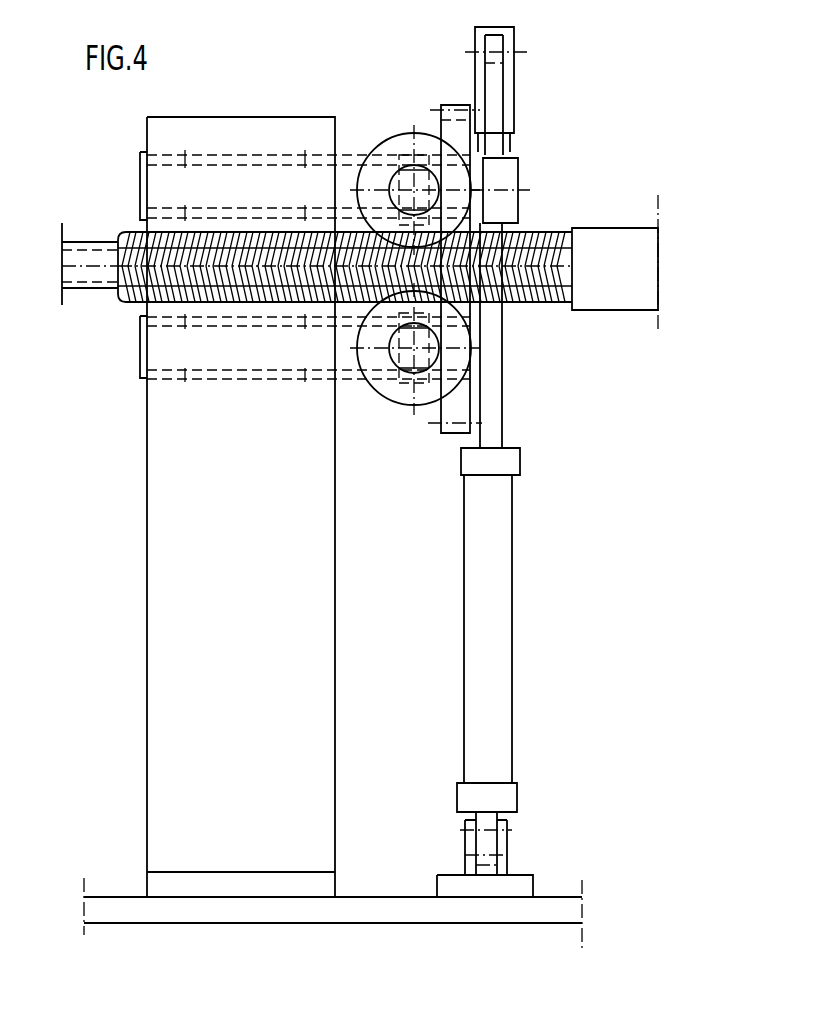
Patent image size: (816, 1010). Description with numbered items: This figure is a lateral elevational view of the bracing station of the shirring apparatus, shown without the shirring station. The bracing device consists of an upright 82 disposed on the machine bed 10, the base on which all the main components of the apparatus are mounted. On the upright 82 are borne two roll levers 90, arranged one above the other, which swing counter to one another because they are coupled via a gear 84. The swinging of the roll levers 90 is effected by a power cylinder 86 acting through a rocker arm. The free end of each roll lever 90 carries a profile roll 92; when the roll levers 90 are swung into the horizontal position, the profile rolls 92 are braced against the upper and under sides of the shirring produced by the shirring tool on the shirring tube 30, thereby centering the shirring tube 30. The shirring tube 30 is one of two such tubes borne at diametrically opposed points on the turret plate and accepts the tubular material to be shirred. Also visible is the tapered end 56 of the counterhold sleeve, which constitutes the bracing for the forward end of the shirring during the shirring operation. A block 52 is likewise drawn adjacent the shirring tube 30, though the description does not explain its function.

The machine bed 10 is at (226, 913).
The shirring tube 30 is at (84, 255).
The bearing block 52 is at (585, 310).
The tapered end of counterhold sleeve 56 is at (572, 236).
The upright 82 is at (175, 494).
The gear 84 is at (457, 128).
The power cylinder 86 is at (490, 628).
The roll lever 90 is at (409, 183).
The profile roll 92 is at (400, 152).